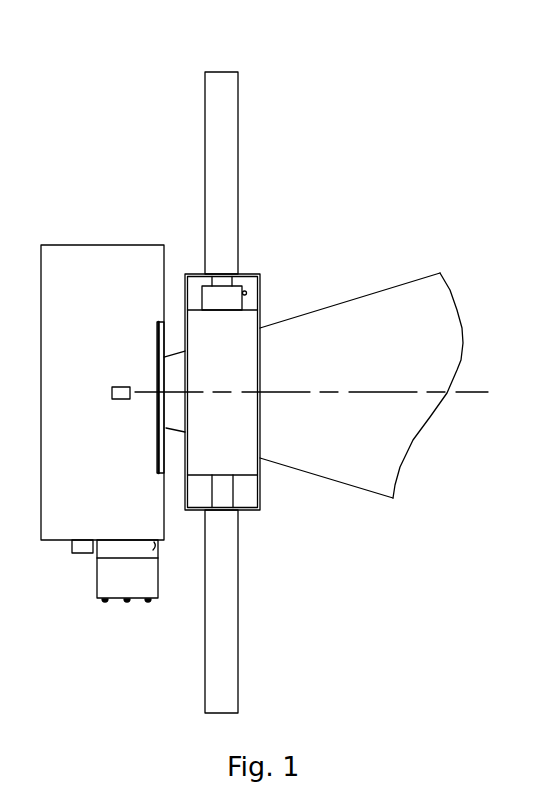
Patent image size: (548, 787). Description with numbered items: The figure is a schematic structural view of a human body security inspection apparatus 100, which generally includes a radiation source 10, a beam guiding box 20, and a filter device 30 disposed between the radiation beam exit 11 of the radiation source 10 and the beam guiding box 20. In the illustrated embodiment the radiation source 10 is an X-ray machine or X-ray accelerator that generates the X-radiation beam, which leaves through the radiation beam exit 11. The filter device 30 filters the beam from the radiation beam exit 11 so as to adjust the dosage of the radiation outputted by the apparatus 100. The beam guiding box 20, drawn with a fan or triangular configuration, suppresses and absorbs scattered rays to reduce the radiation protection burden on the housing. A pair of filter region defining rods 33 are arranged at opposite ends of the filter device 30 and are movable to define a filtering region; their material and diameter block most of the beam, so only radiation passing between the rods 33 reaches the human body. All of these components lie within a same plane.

The human body security inspection apparatus 100 is at (217, 42).
The radiation source 10 is at (125, 400).
The radiation beam exit 11 is at (166, 398).
The beam guiding box 20 is at (363, 467).
The filter device 30 is at (246, 293).
The filter region defining rods 33 is at (238, 118).